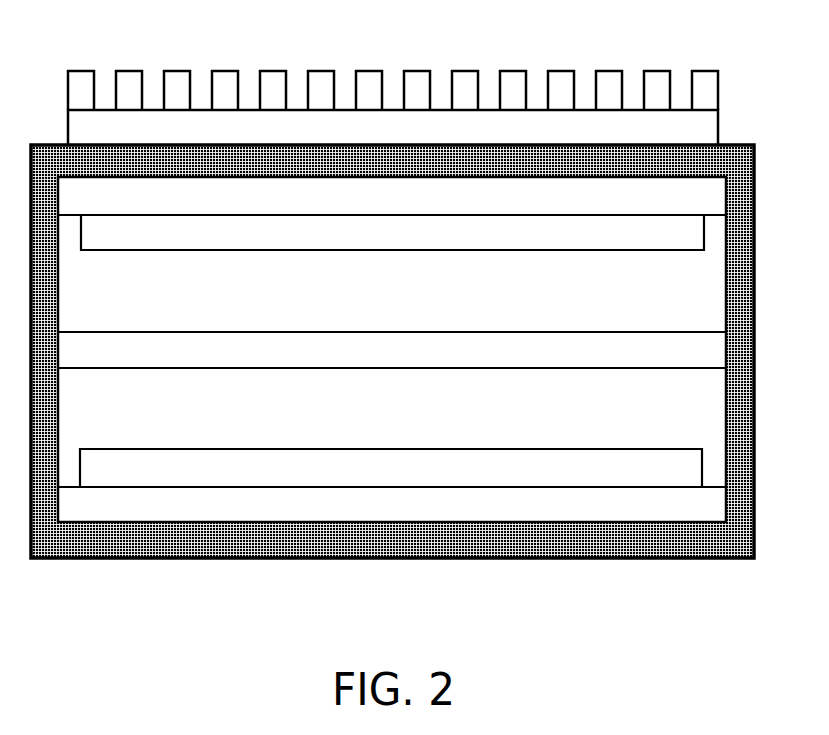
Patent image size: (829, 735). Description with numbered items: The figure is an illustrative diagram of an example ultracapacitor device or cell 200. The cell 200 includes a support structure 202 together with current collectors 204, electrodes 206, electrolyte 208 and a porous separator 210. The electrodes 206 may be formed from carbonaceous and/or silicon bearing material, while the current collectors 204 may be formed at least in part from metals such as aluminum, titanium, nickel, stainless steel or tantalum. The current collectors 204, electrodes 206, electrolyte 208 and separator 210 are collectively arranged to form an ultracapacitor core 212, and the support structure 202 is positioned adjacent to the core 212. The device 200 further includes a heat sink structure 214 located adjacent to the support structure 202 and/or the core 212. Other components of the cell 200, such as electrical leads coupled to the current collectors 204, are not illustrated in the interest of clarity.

The ultracapacitor device 200 is at (307, 585).
The support structure 202 is at (580, 538).
The current collectors 204 is at (707, 210).
The electrodes 206 is at (675, 246).
The electrolyte 208 is at (284, 305).
The porous separator 210 is at (707, 364).
The ultracapacitor core 212 is at (186, 428).
The heat sink structure 214 is at (639, 58).